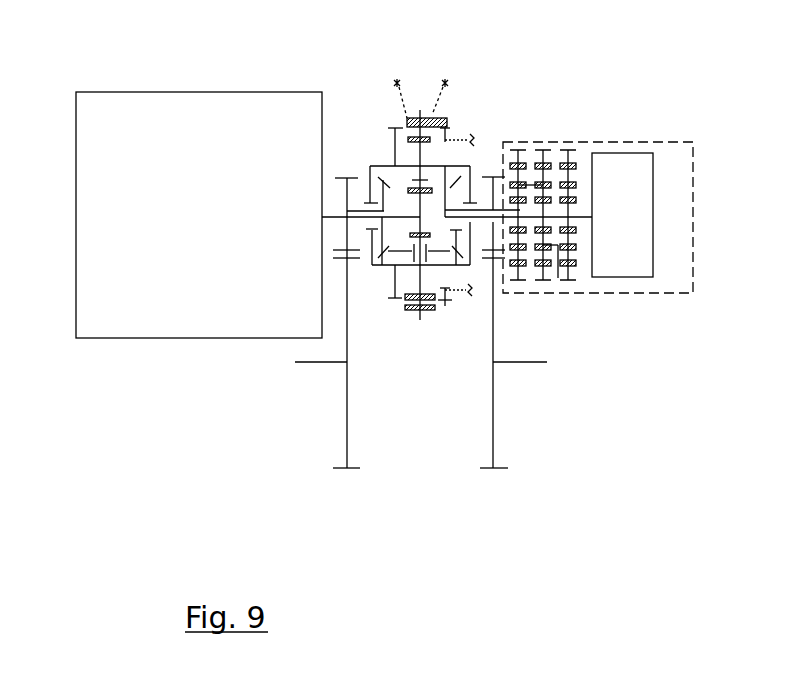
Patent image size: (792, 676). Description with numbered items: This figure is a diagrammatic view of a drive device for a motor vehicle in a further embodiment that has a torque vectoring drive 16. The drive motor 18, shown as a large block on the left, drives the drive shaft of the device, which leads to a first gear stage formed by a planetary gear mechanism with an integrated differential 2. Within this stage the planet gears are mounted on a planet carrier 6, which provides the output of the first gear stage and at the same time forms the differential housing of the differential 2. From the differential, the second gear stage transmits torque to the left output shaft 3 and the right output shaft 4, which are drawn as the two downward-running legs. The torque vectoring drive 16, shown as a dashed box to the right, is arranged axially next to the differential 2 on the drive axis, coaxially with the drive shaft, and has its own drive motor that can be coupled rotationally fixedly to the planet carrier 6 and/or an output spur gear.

The differential 2 is at (476, 268).
The left output shaft 3 is at (296, 374).
The right output shaft 4 is at (541, 374).
The planet carrier 6 is at (375, 162).
The torque vectoring drive 16 is at (696, 191).
The drive motor 18 is at (199, 215).